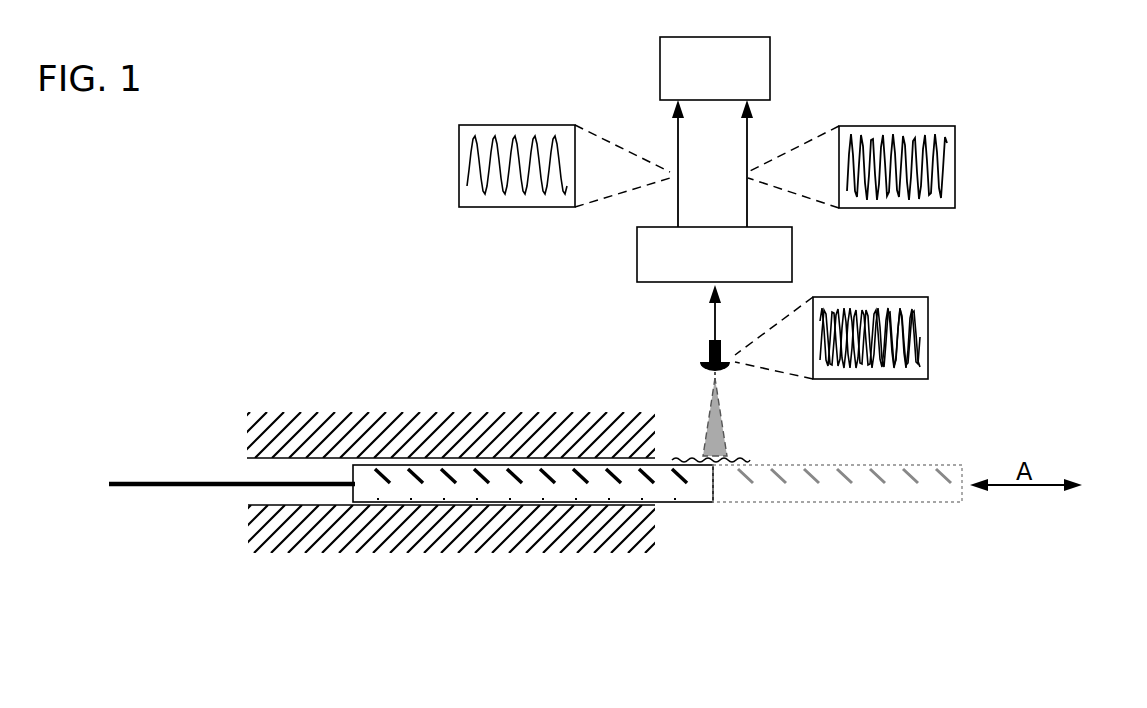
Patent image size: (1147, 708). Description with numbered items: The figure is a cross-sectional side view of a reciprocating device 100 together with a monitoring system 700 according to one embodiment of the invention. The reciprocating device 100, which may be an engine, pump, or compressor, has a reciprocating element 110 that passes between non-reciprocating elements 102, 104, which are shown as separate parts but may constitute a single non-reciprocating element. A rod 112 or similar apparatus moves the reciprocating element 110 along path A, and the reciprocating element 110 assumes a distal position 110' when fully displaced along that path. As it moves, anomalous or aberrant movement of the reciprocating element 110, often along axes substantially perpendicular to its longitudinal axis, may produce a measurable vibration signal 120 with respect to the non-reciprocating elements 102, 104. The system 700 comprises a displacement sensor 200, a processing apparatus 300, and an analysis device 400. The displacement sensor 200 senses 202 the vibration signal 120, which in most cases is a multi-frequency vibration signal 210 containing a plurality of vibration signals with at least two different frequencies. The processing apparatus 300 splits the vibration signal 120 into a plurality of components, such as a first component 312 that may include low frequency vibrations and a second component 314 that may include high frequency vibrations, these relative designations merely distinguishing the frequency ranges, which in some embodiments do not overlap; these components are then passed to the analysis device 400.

The reciprocating device 100 is at (326, 356).
The non-reciprocating element 102 is at (467, 415).
The non-reciprocating element 104 is at (455, 553).
The reciprocating element 110 is at (548, 526).
The distal position 110' is at (837, 526).
The rod 112 is at (183, 480).
The vibration signal 120 is at (737, 458).
The displacement sensor 200 is at (708, 353).
The sensing 202 is at (722, 402).
The multi-frequency vibration signal 210 is at (928, 340).
The processing apparatus 300 is at (636, 255).
The first component 312 is at (458, 160).
The second component 314 is at (957, 163).
The analysis device 400 is at (660, 53).
The system 700 is at (830, 83).